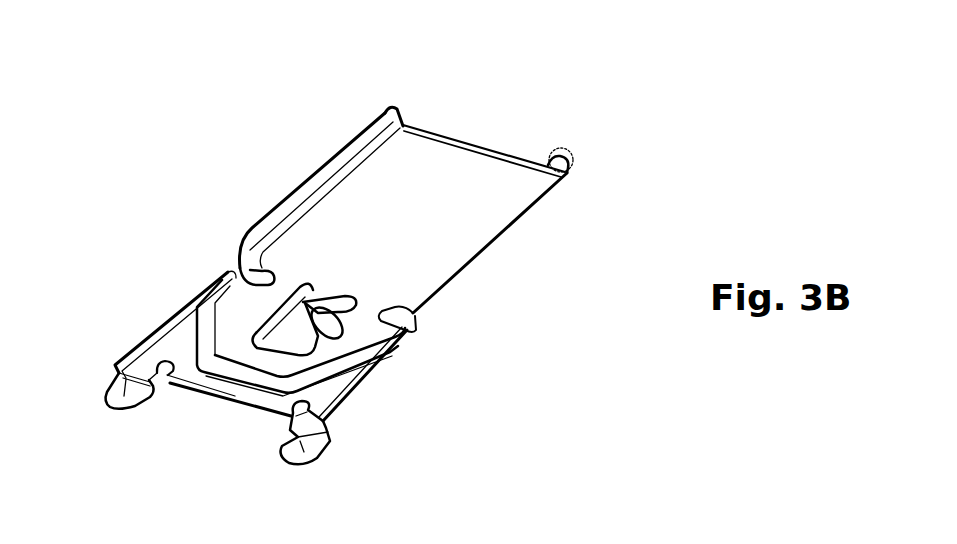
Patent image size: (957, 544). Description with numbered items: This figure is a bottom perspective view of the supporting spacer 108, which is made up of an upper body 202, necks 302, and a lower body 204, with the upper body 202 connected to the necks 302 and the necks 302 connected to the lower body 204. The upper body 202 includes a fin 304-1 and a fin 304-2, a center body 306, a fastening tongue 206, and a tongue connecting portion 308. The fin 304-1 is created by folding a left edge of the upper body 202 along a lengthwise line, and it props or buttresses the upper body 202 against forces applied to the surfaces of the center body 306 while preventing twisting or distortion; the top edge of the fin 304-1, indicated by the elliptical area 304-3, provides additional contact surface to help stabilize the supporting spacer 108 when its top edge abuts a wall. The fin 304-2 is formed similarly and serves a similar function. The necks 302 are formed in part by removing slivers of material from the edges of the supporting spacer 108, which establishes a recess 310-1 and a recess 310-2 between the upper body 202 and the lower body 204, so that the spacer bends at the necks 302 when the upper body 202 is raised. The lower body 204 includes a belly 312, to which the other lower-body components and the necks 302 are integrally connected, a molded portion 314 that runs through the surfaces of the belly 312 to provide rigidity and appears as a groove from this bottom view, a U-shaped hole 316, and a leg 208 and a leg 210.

The supporting spacer 108 is at (91, 65).
The upper body 202 is at (588, 112).
The lower body 204 is at (588, 327).
The fastening tongue 206 is at (338, 330).
The leg 208 is at (300, 449).
The leg 210 is at (127, 383).
The necks 302 is at (377, 306).
The fin 304-1 is at (544, 160).
The fin 304-2 is at (317, 170).
The elliptical area 304-3 is at (563, 148).
The center body 306 is at (445, 205).
The tongue connecting portion 308 is at (343, 316).
The recess 310-1 is at (413, 318).
The recess 310-2 is at (242, 266).
The belly 312 is at (238, 330).
The molded portion 314 is at (207, 353).
The U-shaped hole 316 is at (268, 330).